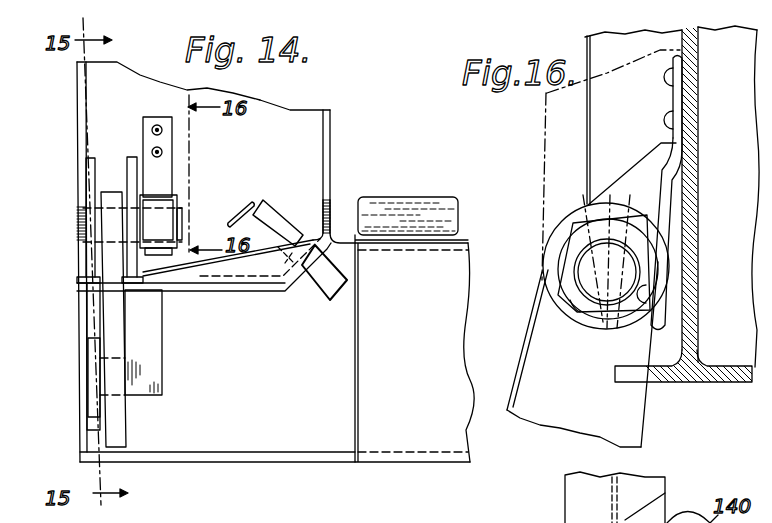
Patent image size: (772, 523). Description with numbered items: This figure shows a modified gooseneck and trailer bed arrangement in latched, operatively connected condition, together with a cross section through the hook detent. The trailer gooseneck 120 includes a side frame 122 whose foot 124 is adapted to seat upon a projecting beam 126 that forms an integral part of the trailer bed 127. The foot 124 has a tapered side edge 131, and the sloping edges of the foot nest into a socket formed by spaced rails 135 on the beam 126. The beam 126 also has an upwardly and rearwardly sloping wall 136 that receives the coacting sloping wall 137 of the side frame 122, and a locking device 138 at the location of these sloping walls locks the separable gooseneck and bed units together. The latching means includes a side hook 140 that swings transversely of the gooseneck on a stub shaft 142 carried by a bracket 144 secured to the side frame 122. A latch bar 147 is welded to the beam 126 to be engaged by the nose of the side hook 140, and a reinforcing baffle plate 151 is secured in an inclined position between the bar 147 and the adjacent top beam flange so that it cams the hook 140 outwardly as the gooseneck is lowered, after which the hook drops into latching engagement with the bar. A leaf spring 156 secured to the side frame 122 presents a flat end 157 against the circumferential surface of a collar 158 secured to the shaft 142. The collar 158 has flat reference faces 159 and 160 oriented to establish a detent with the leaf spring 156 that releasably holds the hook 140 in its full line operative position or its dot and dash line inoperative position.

In FIG. 14, the trailer gooseneck 120 is at (308, 152).
In FIG. 14, the side frame 122 is at (283, 110).
In FIG. 14, the foot 124 is at (263, 289).
In FIG. 14, the projecting beam 126 is at (280, 391).
In FIG. 14, the trailer bed 127 is at (435, 354).
In FIG. 14, the tapered side edge 131 is at (80, 220).
In FIG. 14, the spaced rails 135 is at (230, 268).
In FIG. 14, the sloping wall 136 is at (337, 253).
In FIG. 14, the sloping wall 137 is at (328, 214).
In FIG. 14, the locking device 138 is at (268, 213).
In FIG. 14, the side hook 140 is at (117, 412).
In FIG. 16, the side hook 140 is at (630, 411).
In FIG. 14, the stub shaft 142 is at (108, 240).
In FIG. 16, the stub shaft 142 is at (640, 272).
In FIG. 14, the bracket 144 is at (130, 157).
In FIG. 16, the bracket 144 is at (645, 167).
In FIG. 14, the latch bar 147 is at (152, 372).
In FIG. 14, the reinforcing baffle plate 151 is at (93, 318).
In FIG. 14, the leaf spring 156 is at (167, 160).
In FIG. 16, the leaf spring 156 is at (666, 192).
In FIG. 16, the flat end 157 is at (660, 253).
In FIG. 14, the collar 158 is at (162, 249).
In FIG. 16, the collar 158 is at (578, 309).
In FIG. 16, the flat reference face 159 is at (656, 300).
In FIG. 14, the flat reference face 160 is at (163, 213).
In FIG. 16, the flat reference face 160 is at (568, 252).